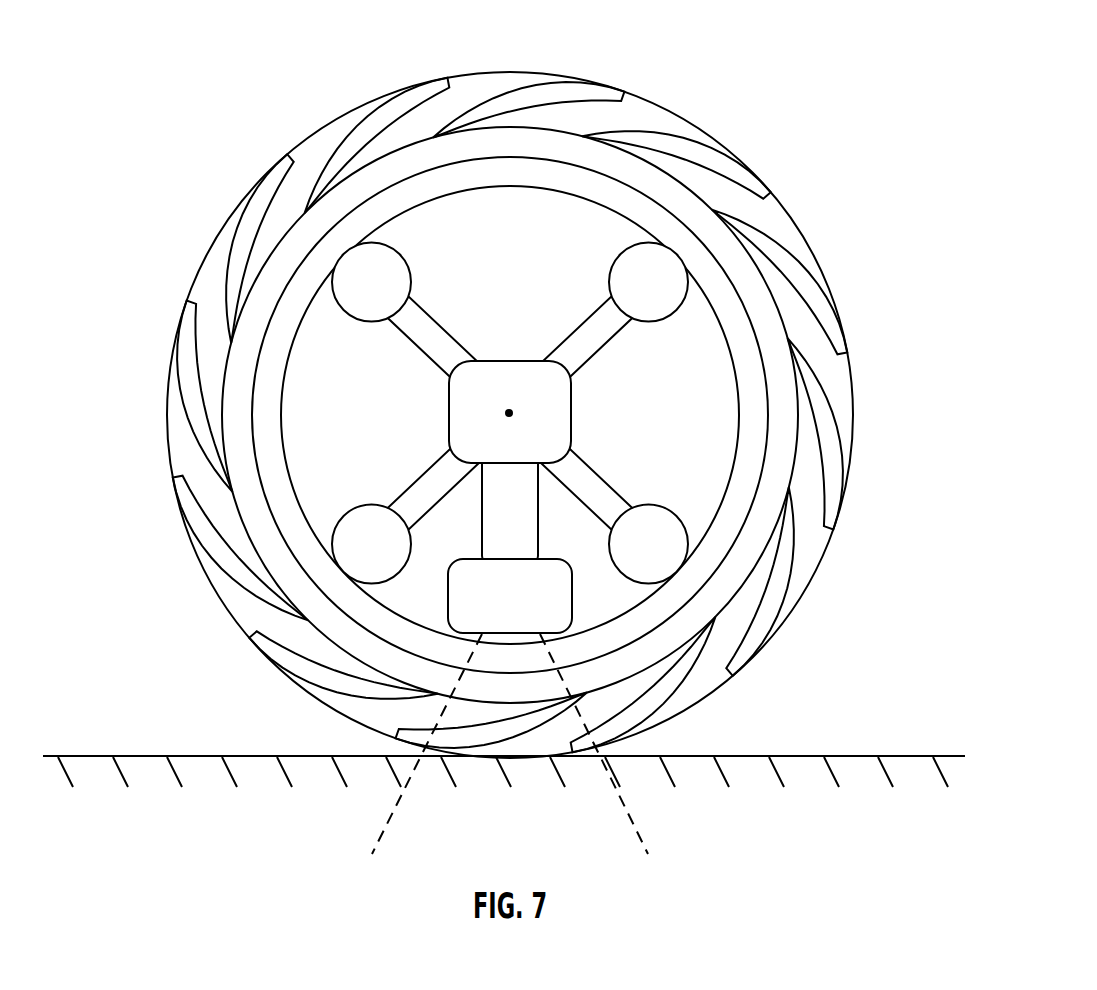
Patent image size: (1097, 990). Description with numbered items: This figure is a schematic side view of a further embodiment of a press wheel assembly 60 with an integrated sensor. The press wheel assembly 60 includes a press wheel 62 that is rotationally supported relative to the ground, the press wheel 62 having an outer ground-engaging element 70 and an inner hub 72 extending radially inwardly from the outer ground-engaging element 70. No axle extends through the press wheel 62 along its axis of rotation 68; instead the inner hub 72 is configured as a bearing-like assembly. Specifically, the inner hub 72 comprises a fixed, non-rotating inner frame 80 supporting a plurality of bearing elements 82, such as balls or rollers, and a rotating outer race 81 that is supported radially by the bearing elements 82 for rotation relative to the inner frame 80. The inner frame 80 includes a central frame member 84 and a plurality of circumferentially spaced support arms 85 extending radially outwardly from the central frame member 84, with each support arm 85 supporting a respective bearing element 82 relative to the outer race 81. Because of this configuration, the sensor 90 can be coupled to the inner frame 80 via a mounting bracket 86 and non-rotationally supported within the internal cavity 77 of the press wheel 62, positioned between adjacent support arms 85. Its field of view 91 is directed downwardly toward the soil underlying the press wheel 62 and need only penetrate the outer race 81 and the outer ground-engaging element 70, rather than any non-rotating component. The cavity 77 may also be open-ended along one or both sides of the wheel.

The press wheel assembly 60 is at (846, 148).
The press wheel 62 is at (244, 147).
The axis of rotation 68 is at (509, 413).
The outer ground-engaging element 70 is at (635, 102).
The inner hub 72 is at (396, 411).
The internal cavity 77 is at (522, 266).
The inner frame 80 is at (541, 353).
The outer race 81 is at (757, 402).
The bearing elements 82 is at (363, 283).
The central frame member 84 is at (492, 383).
The support arms 85 is at (427, 485).
The mounting bracket 86 is at (502, 518).
The sensor 90 is at (520, 610).
The field of view 91 is at (398, 812).